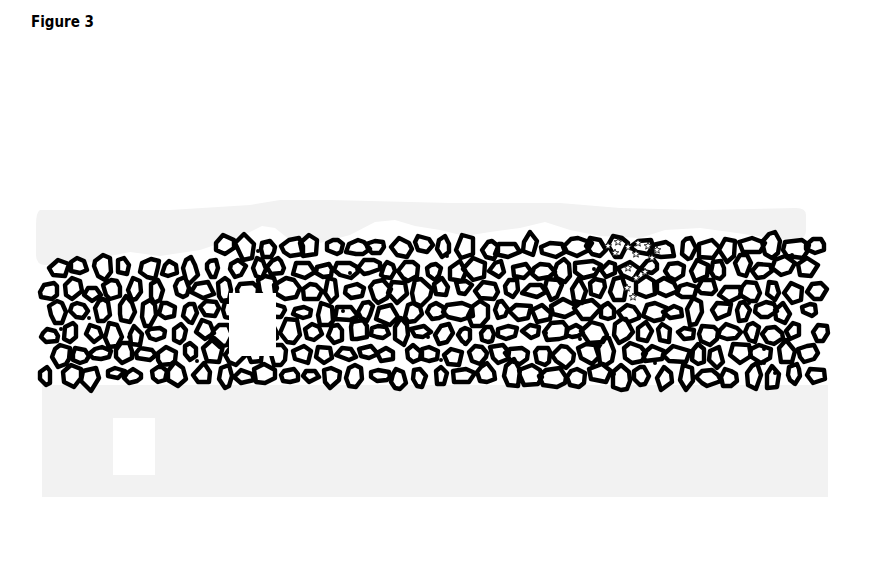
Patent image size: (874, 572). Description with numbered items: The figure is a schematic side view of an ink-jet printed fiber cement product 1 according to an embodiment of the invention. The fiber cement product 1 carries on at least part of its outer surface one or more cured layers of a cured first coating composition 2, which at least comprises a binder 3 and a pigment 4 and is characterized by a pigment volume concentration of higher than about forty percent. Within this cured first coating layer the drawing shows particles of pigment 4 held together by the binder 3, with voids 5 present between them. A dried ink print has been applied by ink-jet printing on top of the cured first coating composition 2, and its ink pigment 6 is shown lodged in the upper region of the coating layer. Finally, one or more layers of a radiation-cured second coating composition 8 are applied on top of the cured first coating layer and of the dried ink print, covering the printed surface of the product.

The fiber cement product 1 is at (435, 441).
The cured first coating composition 2 is at (252, 324).
The binder 3 is at (361, 384).
The pigment 4 is at (408, 384).
The voids 5 is at (392, 249).
The ink pigment 6 is at (615, 240).
The radiation-cured second coating composition 8 is at (677, 223).